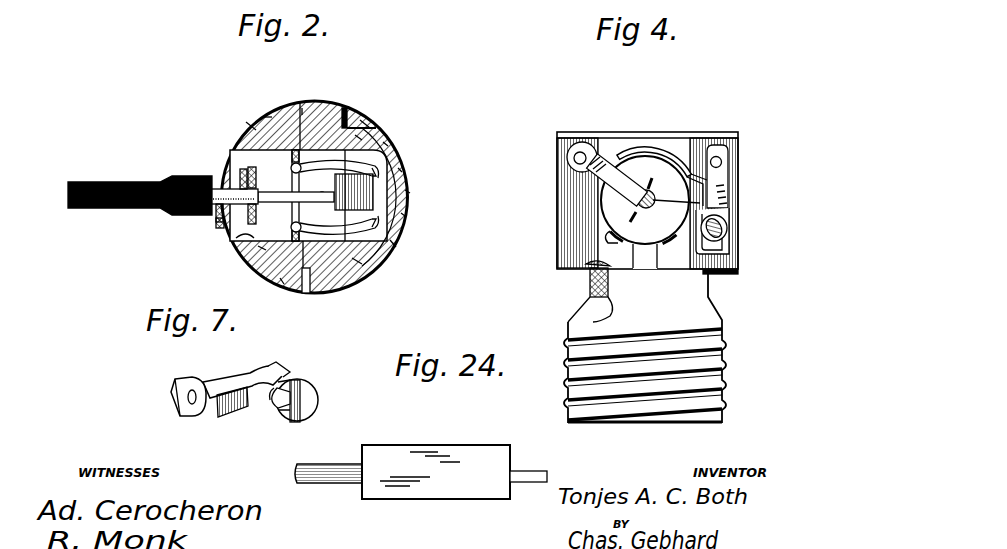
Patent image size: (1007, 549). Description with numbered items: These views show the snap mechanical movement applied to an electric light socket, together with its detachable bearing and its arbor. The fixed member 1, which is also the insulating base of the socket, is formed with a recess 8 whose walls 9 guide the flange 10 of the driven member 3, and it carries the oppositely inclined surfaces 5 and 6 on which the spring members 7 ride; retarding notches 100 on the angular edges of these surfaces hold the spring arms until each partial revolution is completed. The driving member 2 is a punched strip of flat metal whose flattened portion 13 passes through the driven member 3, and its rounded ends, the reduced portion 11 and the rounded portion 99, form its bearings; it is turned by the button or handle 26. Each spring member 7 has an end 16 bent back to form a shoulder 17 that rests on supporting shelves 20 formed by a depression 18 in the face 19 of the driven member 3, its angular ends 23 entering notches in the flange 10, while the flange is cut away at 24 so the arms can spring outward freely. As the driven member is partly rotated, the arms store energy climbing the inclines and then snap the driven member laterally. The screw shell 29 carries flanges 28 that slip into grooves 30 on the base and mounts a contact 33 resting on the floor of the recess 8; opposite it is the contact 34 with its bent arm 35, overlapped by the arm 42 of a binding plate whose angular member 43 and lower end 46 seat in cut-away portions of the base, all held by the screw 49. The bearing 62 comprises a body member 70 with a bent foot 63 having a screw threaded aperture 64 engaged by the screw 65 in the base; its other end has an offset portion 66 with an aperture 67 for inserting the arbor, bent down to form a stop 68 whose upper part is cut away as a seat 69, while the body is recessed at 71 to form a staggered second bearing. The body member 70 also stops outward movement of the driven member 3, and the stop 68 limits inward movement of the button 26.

In FIG. 2, the fixed member 1 is at (383, 260).
In FIG. 4, the fixed member 1 is at (560, 180).
In FIG. 2, the driving member 2 is at (271, 206).
In FIG. 24, the driving member 2 is at (436, 488).
In FIG. 2, the driven member 3 is at (268, 117).
In FIG. 2, the inclined surface 5 is at (354, 192).
In FIG. 2, the inclined surface 6 is at (385, 143).
In FIG. 2, the spring member 7 is at (358, 136).
In FIG. 2, the recess 8 is at (236, 196).
In FIG. 2, the wall 9 is at (253, 238).
In FIG. 2, the flange 10 is at (328, 108).
In FIG. 24, the reduced portion 11 is at (540, 482).
In FIG. 2, the flattened portion 13 is at (294, 187).
In FIG. 24, the flattened portion 13 is at (425, 452).
In FIG. 2, the end of spring member 16 is at (303, 108).
In FIG. 2, the shoulder 17 is at (291, 168).
In FIG. 2, the depression 18 is at (252, 125).
In FIG. 4, the depression 18 is at (718, 232).
In FIG. 2, the face 19 is at (260, 247).
In FIG. 2, the supporting shelf 20 is at (352, 187).
In FIG. 2, the angular end 23 is at (346, 125).
In FIG. 2, the notch 24 is at (365, 125).
In FIG. 2, the button or handle 26 is at (134, 180).
In FIG. 4, the engaging surface 28 is at (590, 276).
In FIG. 4, the screw shell 29 is at (645, 346).
In FIG. 4, the groove 30 is at (610, 284).
In FIG. 4, the contact 33 is at (610, 237).
In FIG. 4, the contact 34 is at (649, 190).
In FIG. 4, the bent arm 35 is at (696, 150).
In FIG. 4, the arm 42 is at (719, 147).
In FIG. 4, the angular member 43 is at (728, 180).
In FIG. 4, the lower end 46 is at (720, 244).
In FIG. 4, the screw 49 is at (722, 162).
In FIG. 4, the bearing 62 is at (612, 173).
In FIG. 7, the bearing 62 is at (242, 382).
In FIG. 4, the bent foot 63 is at (586, 156).
In FIG. 7, the bent foot 63 is at (176, 384).
In FIG. 7, the screw threaded aperture 64 is at (188, 399).
In FIG. 4, the screw 65 is at (578, 154).
In FIG. 7, the offset portion 66 is at (286, 420).
In FIG. 7, the aperture 67 is at (283, 402).
In FIG. 2, the stop 68 is at (217, 227).
In FIG. 4, the stop 68 is at (700, 203).
In FIG. 7, the stop 68 is at (315, 398).
In FIG. 7, the bearing seat 69 is at (302, 410).
In FIG. 2, the body member 70 is at (242, 171).
In FIG. 4, the body member 70 is at (620, 206).
In FIG. 7, the body member 70 is at (272, 366).
In FIG. 7, the recess 71 is at (268, 396).
In FIG. 2, the rounded end 99 is at (253, 192).
In FIG. 4, the rounded end 99 is at (655, 186).
In FIG. 24, the rounded end 99 is at (338, 478).
In FIG. 2, the retarding notch 100 is at (400, 171).